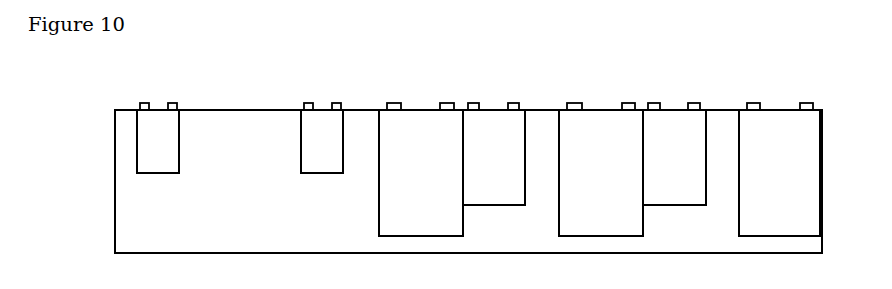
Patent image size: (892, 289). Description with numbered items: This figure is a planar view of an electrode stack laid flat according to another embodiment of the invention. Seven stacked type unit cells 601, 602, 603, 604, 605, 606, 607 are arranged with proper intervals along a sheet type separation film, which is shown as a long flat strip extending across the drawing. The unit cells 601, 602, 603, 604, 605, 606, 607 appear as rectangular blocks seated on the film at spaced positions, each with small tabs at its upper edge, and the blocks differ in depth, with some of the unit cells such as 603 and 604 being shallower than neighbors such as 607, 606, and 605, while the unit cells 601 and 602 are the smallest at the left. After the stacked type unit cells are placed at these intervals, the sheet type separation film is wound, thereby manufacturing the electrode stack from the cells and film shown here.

The stacked type unit cell 601 is at (157, 118).
The stacked type unit cell 602 is at (323, 118).
The stacked type unit cell 603 is at (493, 118).
The stacked type unit cell 604 is at (673, 118).
The stacked type unit cell 605 is at (782, 118).
The stacked type unit cell 606 is at (598, 118).
The stacked type unit cell 607 is at (419, 118).